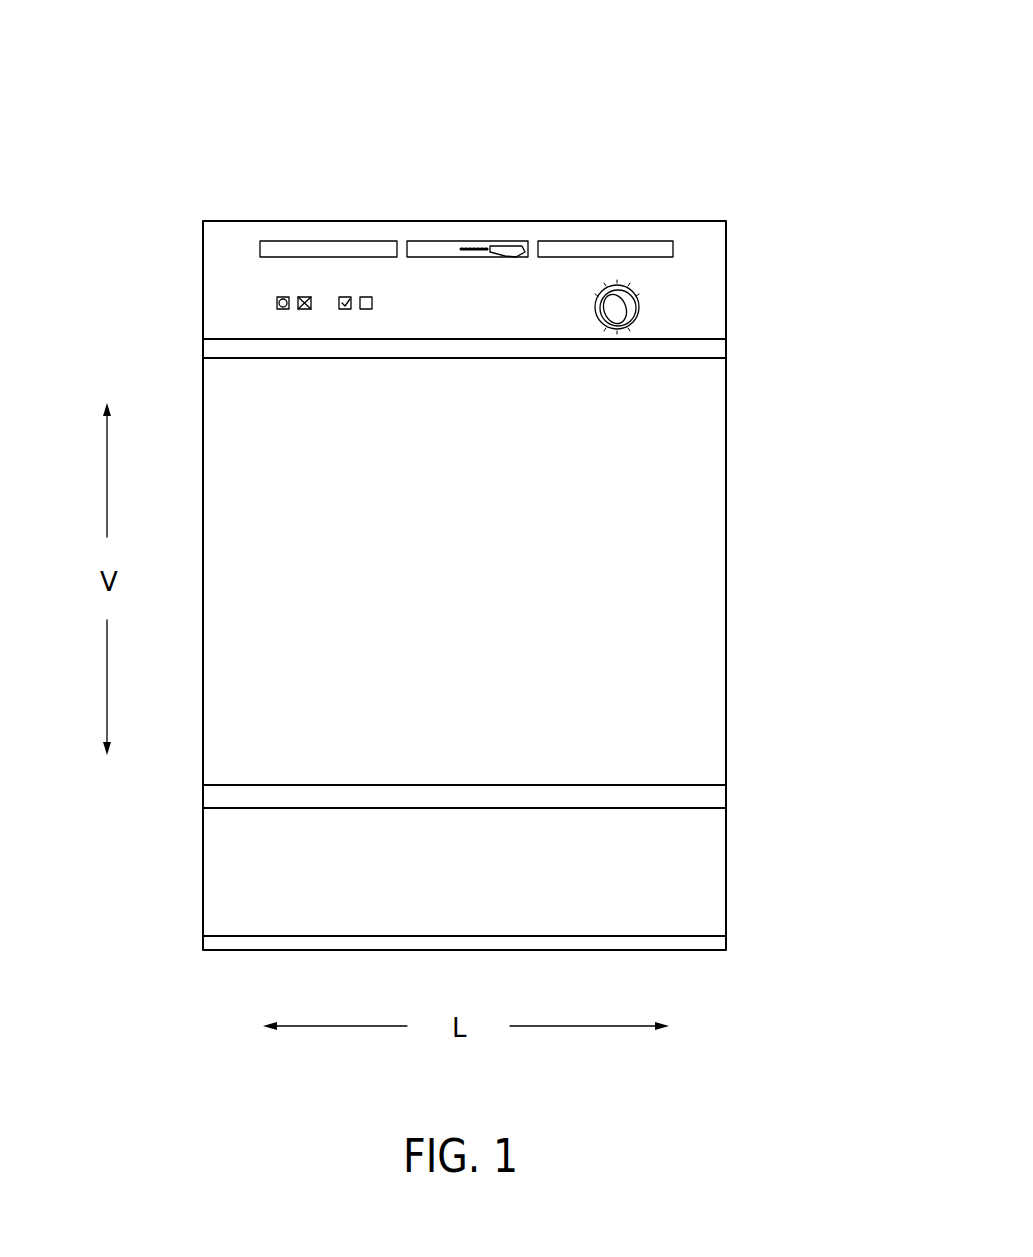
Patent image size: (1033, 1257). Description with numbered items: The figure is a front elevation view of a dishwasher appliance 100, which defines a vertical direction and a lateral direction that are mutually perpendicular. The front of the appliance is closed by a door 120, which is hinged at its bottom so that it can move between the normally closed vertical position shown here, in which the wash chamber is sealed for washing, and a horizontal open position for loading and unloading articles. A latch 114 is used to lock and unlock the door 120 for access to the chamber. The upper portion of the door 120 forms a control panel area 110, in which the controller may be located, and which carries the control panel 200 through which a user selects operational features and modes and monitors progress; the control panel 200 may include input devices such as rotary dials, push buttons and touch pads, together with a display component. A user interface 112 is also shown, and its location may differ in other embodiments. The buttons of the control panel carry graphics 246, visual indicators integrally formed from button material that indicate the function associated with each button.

The dishwasher appliance 100 is at (475, 482).
The control panel area 110 is at (702, 258).
The user interface 112 is at (617, 307).
The latch 114 is at (520, 257).
The door 120 is at (683, 553).
The control panel 200 is at (345, 296).
The graphic 246 is at (303, 296).